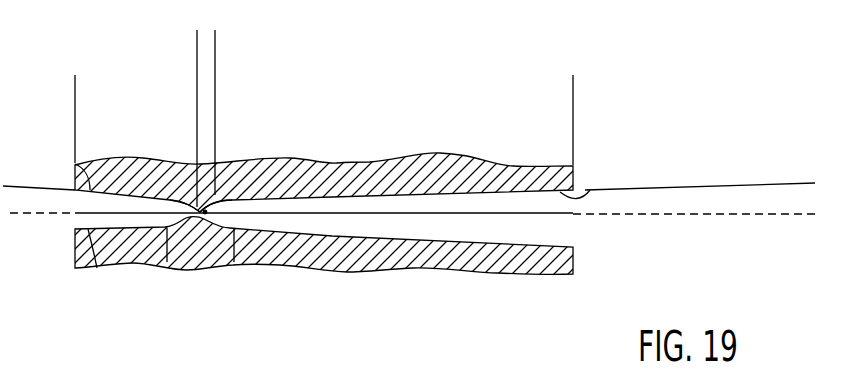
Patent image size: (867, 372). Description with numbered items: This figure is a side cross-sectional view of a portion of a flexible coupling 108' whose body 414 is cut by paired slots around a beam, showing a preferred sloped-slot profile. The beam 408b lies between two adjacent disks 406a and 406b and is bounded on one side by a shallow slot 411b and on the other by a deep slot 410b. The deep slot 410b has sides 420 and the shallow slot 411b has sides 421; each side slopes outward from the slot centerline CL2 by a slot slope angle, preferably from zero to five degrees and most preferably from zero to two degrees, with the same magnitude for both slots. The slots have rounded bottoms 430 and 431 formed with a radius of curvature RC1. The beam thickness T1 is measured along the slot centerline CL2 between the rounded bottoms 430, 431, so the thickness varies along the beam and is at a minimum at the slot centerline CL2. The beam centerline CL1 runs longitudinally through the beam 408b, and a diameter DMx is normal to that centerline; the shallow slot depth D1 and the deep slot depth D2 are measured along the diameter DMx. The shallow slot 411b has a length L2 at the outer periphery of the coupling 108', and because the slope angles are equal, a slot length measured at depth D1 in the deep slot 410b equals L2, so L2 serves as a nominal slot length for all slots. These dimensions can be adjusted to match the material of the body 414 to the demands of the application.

The flexible coupling 108' is at (616, 68).
The body 414 is at (597, 108).
The disk 406a is at (574, 173).
The disk 406b is at (573, 266).
The deep slot side 420 is at (588, 190).
The shallow slot side 421 is at (75, 164).
The beam 408b is at (197, 210).
The deep slot 410b is at (576, 230).
The shallow slot 411b is at (86, 221).
The rounded slot bottom 430 is at (234, 262).
The rounded slot bottom 431 is at (183, 224).
The radius of curvature RC1 is at (196, 226).
The beam centerline CL1 is at (197, 205).
The slot centerline CL2 is at (704, 216).
The diameter DMx is at (487, 213).
The beam thickness T1 is at (143, 48).
The shallow slot depth D1 is at (197, 91).
The deep slot depth D2 is at (573, 91).
The shallow slot length L2 is at (332, 123).